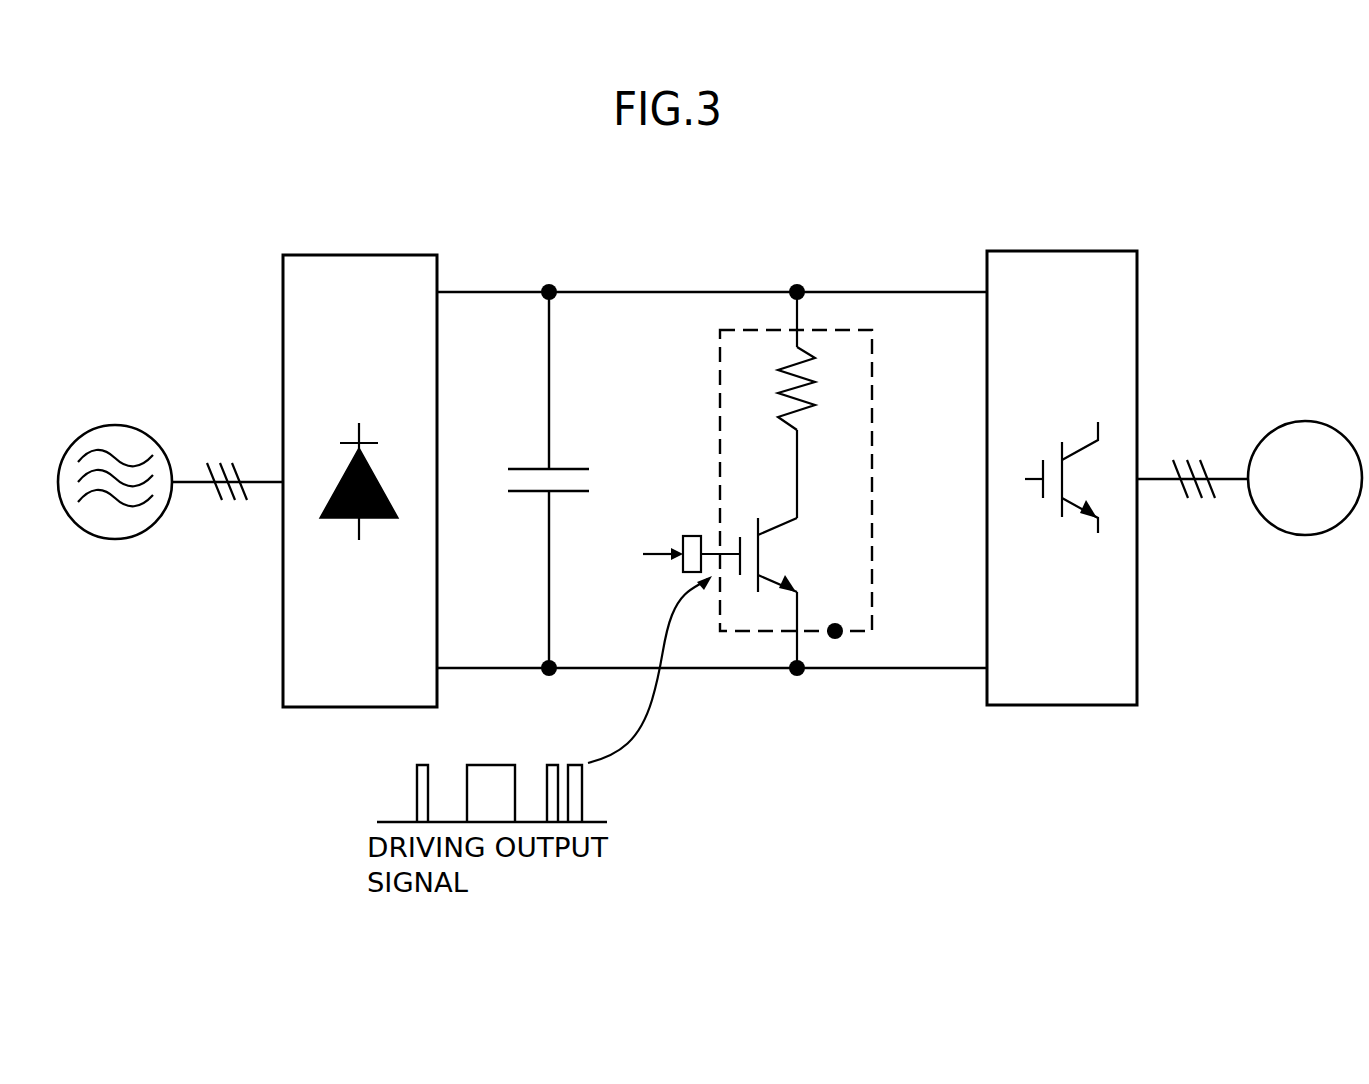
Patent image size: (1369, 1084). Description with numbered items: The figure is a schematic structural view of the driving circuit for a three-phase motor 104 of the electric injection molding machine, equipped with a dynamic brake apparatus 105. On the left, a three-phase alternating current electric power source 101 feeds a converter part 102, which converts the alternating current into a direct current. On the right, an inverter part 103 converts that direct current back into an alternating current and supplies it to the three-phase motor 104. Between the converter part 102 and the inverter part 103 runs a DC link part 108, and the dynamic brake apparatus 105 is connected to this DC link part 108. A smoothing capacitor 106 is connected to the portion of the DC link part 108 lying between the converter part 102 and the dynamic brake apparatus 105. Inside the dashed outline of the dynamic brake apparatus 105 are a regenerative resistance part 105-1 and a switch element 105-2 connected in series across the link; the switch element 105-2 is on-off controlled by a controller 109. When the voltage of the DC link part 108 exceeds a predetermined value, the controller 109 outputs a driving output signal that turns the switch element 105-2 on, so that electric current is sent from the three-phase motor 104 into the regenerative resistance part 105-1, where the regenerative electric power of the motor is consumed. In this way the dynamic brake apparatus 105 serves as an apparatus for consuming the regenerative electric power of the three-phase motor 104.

The three-phase alternating current electric power source 101 is at (115, 539).
The converter part 102 is at (356, 255).
The inverter part 103 is at (1058, 251).
The three-phase motor 104 is at (1308, 535).
The dynamic brake apparatus 105 is at (835, 631).
The regenerative resistance part 105-1 is at (818, 403).
The switch element 105-2 is at (797, 556).
The smoothing capacitor 106 is at (530, 469).
The DC link part 108 is at (861, 292).
The controller 109 is at (690, 535).